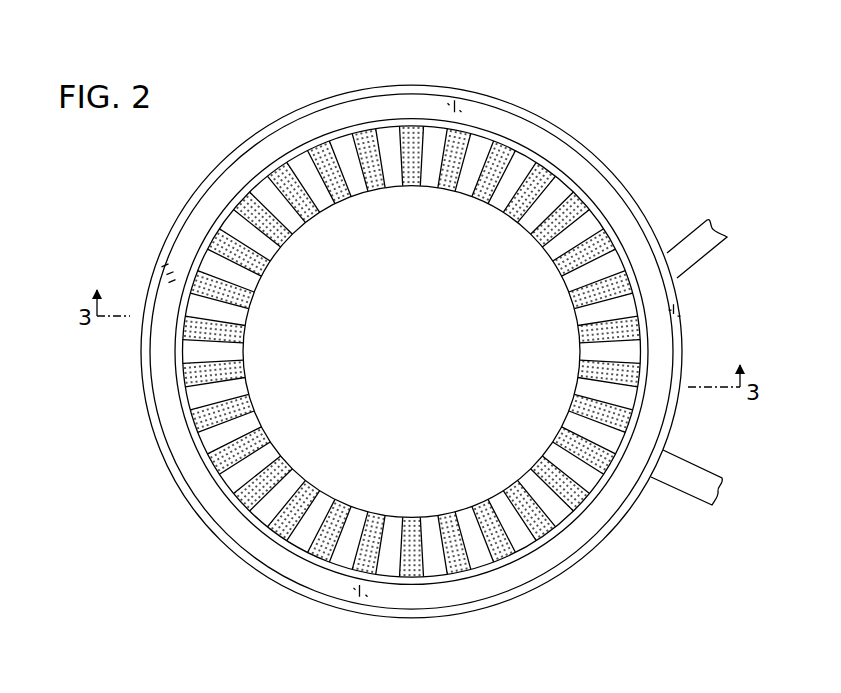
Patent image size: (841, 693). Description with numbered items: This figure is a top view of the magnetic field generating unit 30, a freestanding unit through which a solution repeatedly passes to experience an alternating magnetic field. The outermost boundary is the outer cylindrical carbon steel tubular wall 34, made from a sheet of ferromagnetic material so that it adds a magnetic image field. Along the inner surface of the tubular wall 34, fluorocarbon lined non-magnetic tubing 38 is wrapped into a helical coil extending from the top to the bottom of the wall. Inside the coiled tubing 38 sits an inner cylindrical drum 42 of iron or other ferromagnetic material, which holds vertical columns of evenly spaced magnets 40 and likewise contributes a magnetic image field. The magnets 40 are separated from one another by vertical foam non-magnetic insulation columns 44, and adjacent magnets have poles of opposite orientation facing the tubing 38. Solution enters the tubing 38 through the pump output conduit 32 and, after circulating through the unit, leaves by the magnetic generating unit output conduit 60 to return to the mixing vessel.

The magnetic field generating unit 30 is at (150, 207).
The pump output conduit 32 is at (693, 222).
The outer cylindrical carbon steel tubular wall 34 is at (411, 318).
The fluorocarbon lined non-magnetic tubing 38 is at (458, 351).
The magnets 40 is at (411, 334).
The inner cylindrical drum 42 is at (411, 322).
The vertical foam non-magnetic insulation columns 44 is at (394, 321).
The magnetic generating unit output conduit 60 is at (698, 510).